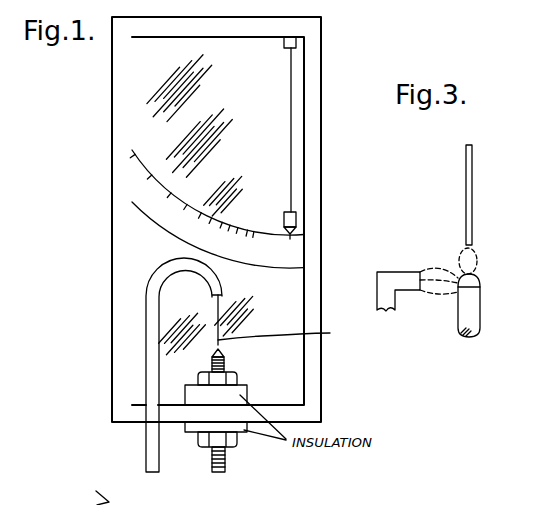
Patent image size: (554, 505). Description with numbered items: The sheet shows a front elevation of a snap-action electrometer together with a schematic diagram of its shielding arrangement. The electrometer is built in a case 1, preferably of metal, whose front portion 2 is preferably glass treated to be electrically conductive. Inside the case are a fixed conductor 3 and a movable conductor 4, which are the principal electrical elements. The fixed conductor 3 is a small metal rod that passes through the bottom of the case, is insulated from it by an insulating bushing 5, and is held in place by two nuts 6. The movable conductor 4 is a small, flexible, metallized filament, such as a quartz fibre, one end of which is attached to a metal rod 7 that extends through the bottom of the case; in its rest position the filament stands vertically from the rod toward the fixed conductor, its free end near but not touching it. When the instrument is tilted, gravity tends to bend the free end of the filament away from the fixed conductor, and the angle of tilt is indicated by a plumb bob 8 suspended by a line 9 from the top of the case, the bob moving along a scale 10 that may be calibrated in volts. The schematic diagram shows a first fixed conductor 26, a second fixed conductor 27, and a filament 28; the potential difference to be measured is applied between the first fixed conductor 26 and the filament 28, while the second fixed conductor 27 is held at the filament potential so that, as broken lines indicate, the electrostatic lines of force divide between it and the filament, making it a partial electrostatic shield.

In FIG. 1, the case 1 is at (315, 95).
In FIG. 1, the front portion 2 is at (283, 304).
In FIG. 1, the fixed conductor 3 is at (224, 366).
In FIG. 1, the movable conductor 4 is at (281, 332).
In FIG. 1, the insulating bushing 5 is at (193, 400).
In FIG. 1, the nuts 6 is at (199, 378).
In FIG. 1, the metal rod 7 is at (146, 337).
In FIG. 1, the plumb bob 8 is at (296, 219).
In FIG. 1, the line 9 is at (291, 138).
In FIG. 1, the scale 10 is at (295, 263).
In FIG. 3, the first fixed conductor 26 is at (482, 306).
In FIG. 3, the second fixed conductor 27 is at (413, 287).
In FIG. 3, the filament 28 is at (472, 187).